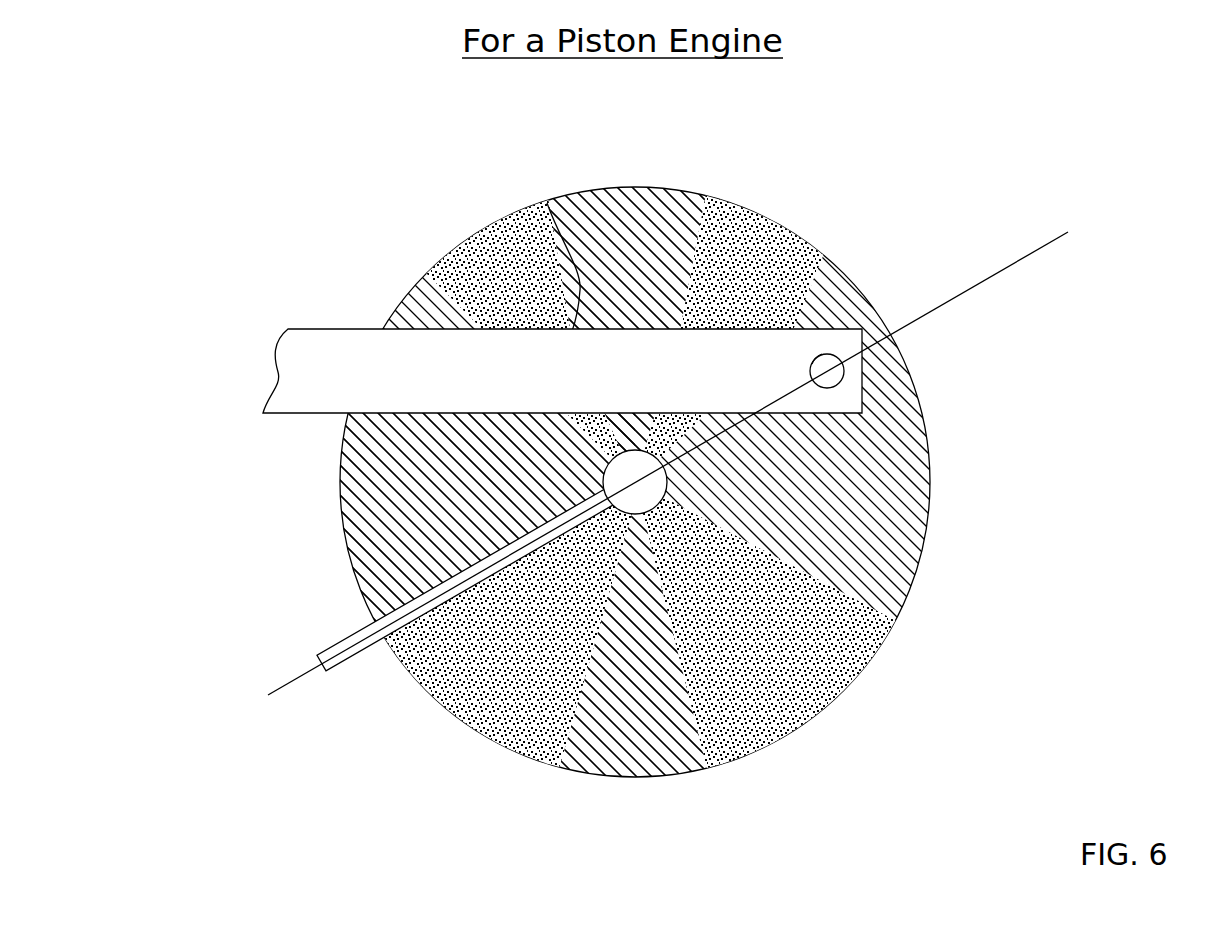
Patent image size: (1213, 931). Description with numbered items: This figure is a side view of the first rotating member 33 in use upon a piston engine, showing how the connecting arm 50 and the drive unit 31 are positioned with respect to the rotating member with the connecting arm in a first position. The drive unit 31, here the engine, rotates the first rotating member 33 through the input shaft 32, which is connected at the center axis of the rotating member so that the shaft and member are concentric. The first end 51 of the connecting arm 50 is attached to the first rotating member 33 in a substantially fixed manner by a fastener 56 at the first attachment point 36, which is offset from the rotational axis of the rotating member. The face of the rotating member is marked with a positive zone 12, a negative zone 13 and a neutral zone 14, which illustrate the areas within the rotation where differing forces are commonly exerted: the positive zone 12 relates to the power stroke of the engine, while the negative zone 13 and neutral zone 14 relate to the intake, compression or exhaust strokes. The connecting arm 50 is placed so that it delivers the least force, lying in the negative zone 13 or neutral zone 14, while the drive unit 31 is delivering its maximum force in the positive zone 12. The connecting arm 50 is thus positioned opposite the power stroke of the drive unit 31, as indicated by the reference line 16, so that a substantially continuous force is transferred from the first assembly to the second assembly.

The positive zone 12 is at (413, 296).
The negative zone 13 is at (507, 215).
The neutral zone 14 is at (628, 193).
The reference line 16 is at (1037, 248).
The drive unit 31 is at (347, 634).
The input shaft 32 is at (652, 506).
The first rotating member 33 is at (390, 457).
The first attachment point 36 is at (842, 387).
The connecting arm 50 is at (322, 333).
The first end 51 is at (547, 203).
The fastener 56 is at (812, 352).